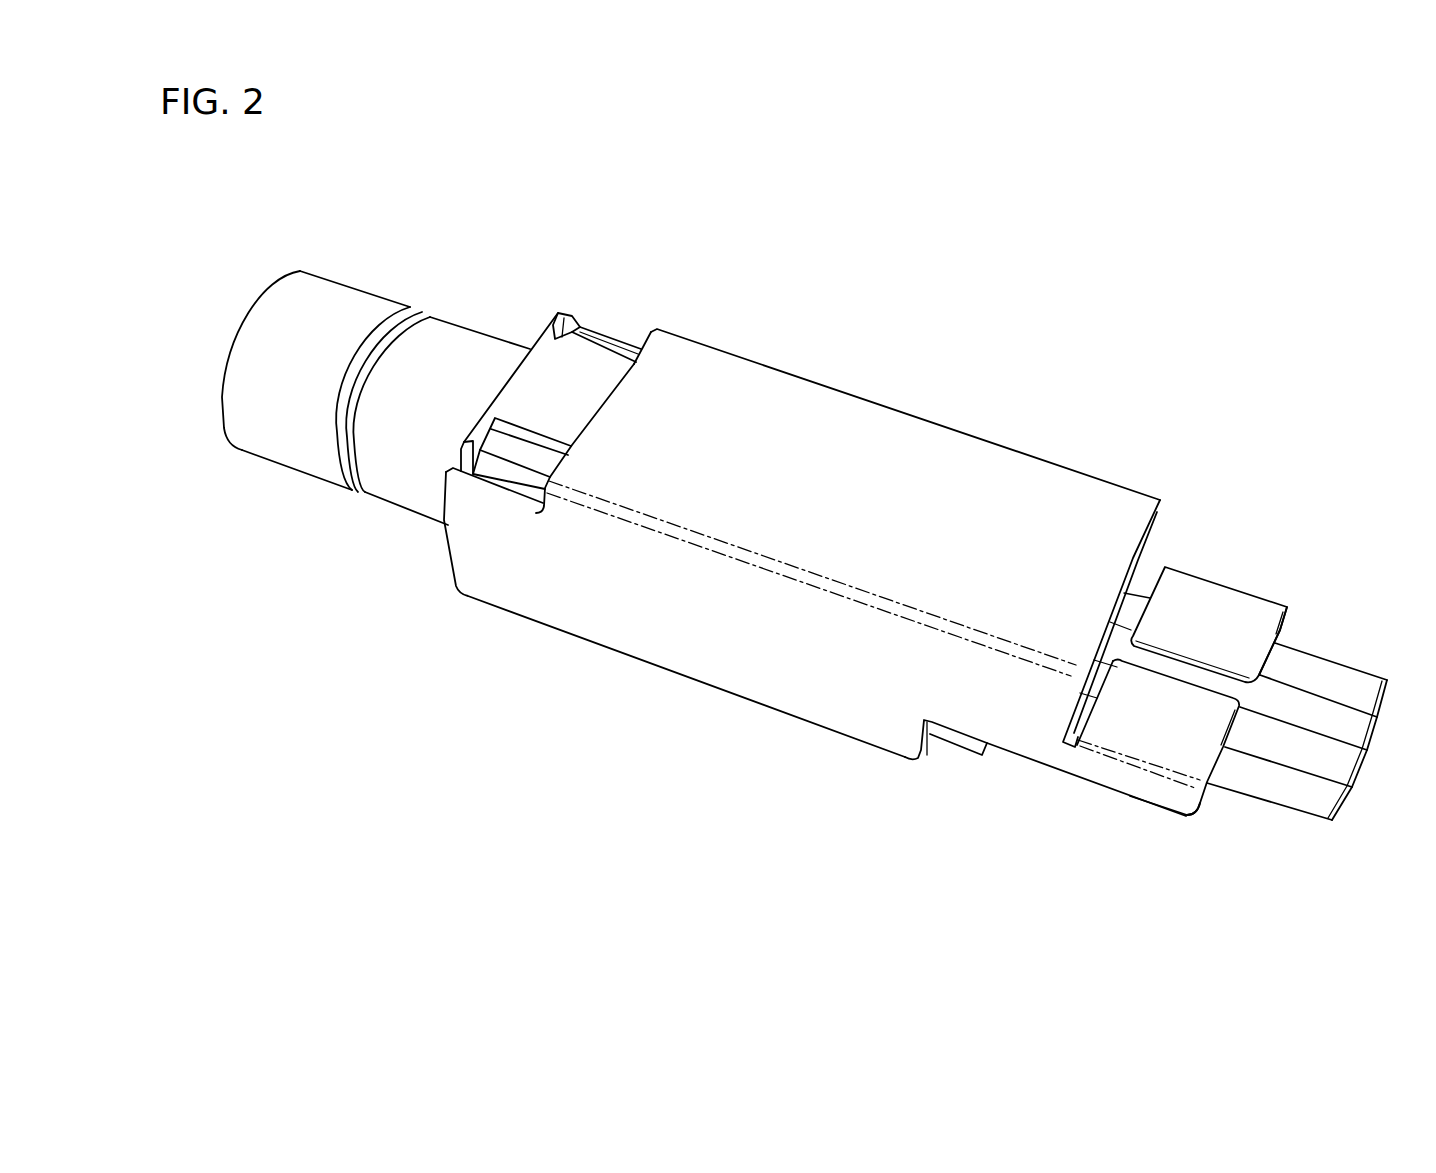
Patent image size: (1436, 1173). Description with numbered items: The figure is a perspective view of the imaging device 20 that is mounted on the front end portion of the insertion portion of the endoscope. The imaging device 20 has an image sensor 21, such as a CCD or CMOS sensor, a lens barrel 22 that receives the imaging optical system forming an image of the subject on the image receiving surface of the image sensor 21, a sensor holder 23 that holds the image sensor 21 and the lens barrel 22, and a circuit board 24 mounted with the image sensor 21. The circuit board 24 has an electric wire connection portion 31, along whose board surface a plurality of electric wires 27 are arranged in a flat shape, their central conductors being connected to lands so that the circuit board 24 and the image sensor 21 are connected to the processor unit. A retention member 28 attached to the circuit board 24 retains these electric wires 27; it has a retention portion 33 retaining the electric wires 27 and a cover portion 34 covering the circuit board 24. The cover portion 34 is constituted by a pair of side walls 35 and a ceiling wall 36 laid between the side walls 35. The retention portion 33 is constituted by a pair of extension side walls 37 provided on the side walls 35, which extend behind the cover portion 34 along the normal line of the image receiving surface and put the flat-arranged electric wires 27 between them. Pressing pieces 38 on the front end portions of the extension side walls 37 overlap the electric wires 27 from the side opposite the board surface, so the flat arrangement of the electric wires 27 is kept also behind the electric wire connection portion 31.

The imaging device 20 is at (1067, 243).
The image sensor 21 is at (597, 345).
The lens barrel 22 is at (340, 288).
The sensor holder 23 is at (467, 332).
The circuit board 24 is at (932, 791).
The electric wire connection portion 31 is at (957, 740).
The electric wires 27 is at (1290, 695).
The retention member 28 is at (1221, 640).
The retention portion 33 is at (1191, 685).
The cover portion 34 is at (825, 556).
The side walls 35 is at (1157, 543).
The ceiling wall 36 is at (850, 407).
The extension side walls 37 is at (1283, 632).
The pressing pieces 38 is at (1190, 590).